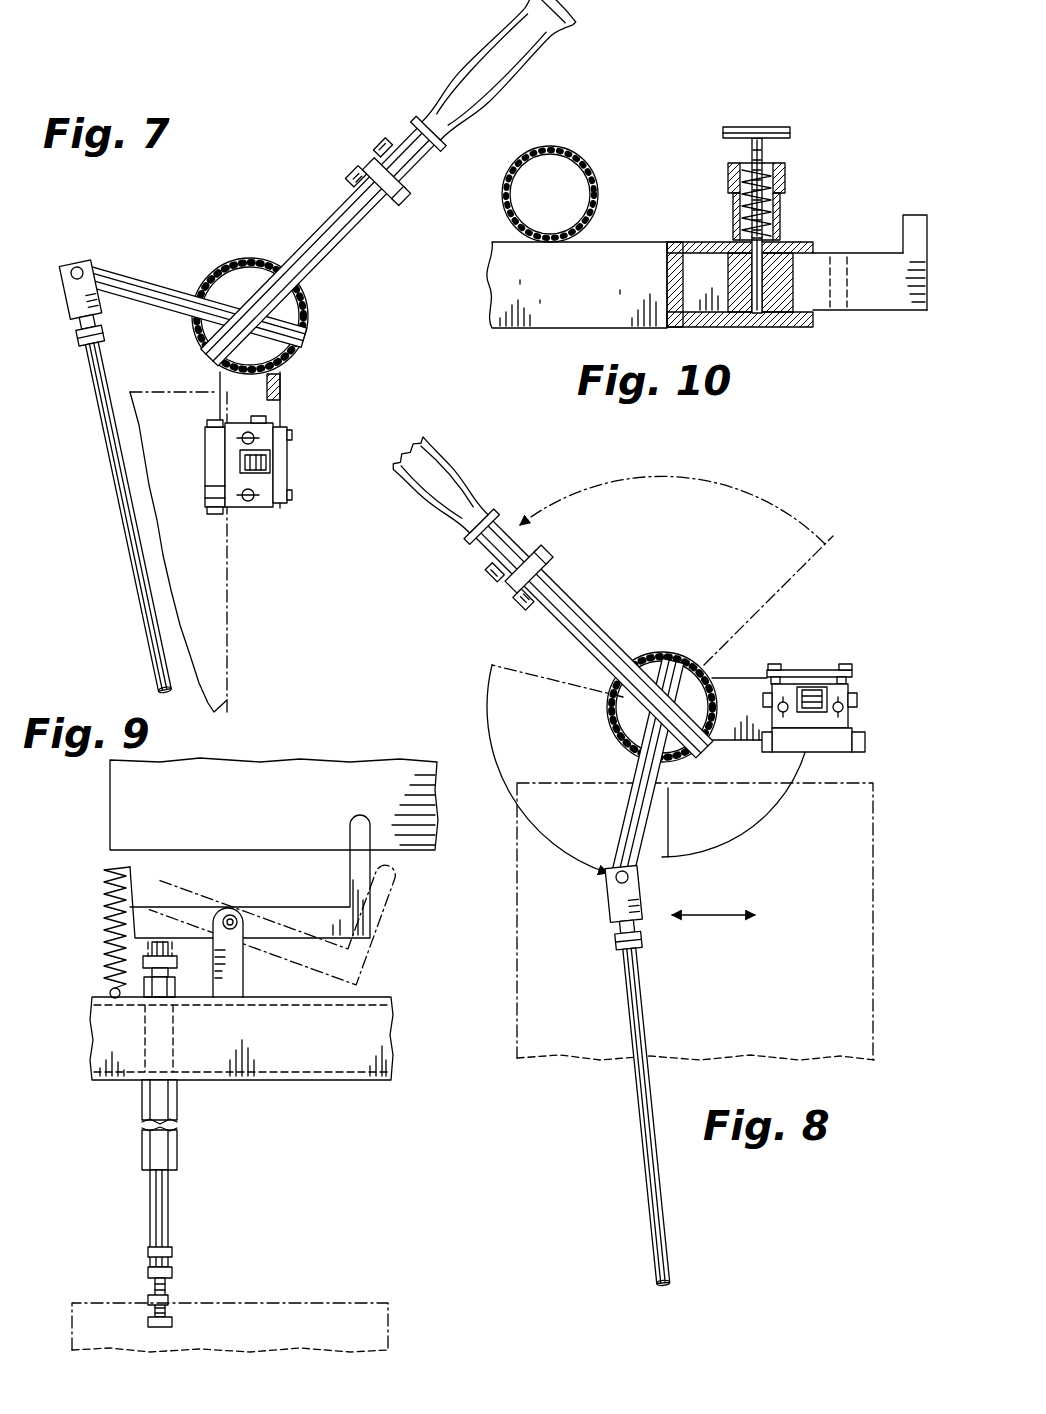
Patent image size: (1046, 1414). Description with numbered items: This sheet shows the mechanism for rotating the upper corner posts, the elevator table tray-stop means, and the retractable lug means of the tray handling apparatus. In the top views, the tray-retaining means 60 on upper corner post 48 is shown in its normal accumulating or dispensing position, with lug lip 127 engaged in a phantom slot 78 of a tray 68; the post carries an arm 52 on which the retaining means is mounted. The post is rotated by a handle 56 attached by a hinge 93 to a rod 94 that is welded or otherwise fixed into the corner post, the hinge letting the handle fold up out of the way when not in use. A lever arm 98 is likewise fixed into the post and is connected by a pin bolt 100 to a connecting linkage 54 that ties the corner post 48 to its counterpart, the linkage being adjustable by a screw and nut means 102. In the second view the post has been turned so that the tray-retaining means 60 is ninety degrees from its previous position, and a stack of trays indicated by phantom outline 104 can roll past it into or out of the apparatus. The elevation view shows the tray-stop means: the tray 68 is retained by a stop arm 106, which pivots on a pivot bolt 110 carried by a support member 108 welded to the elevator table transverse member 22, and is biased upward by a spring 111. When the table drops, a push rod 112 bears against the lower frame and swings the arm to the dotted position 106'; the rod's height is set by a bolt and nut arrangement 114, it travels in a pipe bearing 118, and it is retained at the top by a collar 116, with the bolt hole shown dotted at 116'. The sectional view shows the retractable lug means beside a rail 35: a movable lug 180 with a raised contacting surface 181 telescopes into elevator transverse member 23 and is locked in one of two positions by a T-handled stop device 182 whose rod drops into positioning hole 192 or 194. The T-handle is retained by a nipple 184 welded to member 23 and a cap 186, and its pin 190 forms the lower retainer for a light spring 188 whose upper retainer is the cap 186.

In FIG. 9, the elevator table transverse member 22 is at (297, 1060).
In FIG. 10, the elevator transverse member 23 is at (601, 242).
In FIG. 10, the tubular rail 35 is at (582, 164).
In FIG. 7, the upper corner post 48 is at (303, 293).
In FIG. 8, the upper corner post 48 is at (673, 660).
In FIG. 7, the arm 52 is at (303, 337).
In FIG. 8, the arm 52 is at (690, 657).
In FIG. 7, the connecting linkage 54 is at (115, 457).
In FIG. 8, the connecting linkage 54 is at (653, 1167).
In FIG. 7, the handle 56 is at (490, 57).
In FIG. 8, the handle 56 is at (452, 488).
In FIG. 7, the tray-retaining means 60 is at (306, 458).
In FIG. 8, the tray-retaining means 60 is at (818, 659).
In FIG. 7, the tray 68 is at (240, 560).
In FIG. 9, the tray 68 is at (102, 822).
In FIG. 7, the phantom slot 78 is at (217, 620).
In FIG. 7, the hinge 93 is at (365, 173).
In FIG. 8, the hinge 93 is at (512, 588).
In FIG. 7, the rod 94 is at (342, 227).
In FIG. 8, the rod 94 is at (594, 639).
In FIG. 7, the lever arm 98 is at (143, 287).
In FIG. 8, the lever arm 98 is at (623, 820).
In FIG. 7, the pin bolt 100 is at (83, 263).
In FIG. 8, the pin bolt 100 is at (624, 899).
In FIG. 7, the screw and nut means 102 is at (102, 335).
In FIG. 8, the screw and nut means 102 is at (620, 942).
In FIG. 8, the phantom outline 104 is at (890, 860).
In FIG. 9, the stop arm 106 is at (250, 876).
In FIG. 9, the bracket rotated position 106' is at (310, 889).
In FIG. 9, the support member 108 is at (241, 983).
In FIG. 9, the pivot bolt 110 is at (230, 915).
In FIG. 9, the spring 111 is at (105, 963).
In FIG. 9, the push rod 112 is at (164, 1207).
In FIG. 9, the bolt and nut arrangement 114 is at (166, 1288).
In FIG. 9, the collar 116 is at (184, 971).
In FIG. 9, the bolt hole 116' is at (188, 956).
In FIG. 9, the pipe bearing 118 is at (178, 1145).
In FIG. 7, the lug lip 127 is at (215, 488).
In FIG. 8, the lug lip 127 is at (825, 741).
In FIG. 10, the movable lug 180 is at (860, 262).
In FIG. 10, the raised contacting surface 181 is at (920, 225).
In FIG. 10, the T-handled stop device 182 is at (790, 133).
In FIG. 10, the nipple 184 is at (781, 210).
In FIG. 10, the cap 186 is at (785, 170).
In FIG. 10, the light spring 188 is at (733, 211).
In FIG. 10, the pin 190 is at (800, 242).
In FIG. 10, the positioning hole 192 is at (848, 306).
In FIG. 10, the positioning hole 194 is at (757, 313).